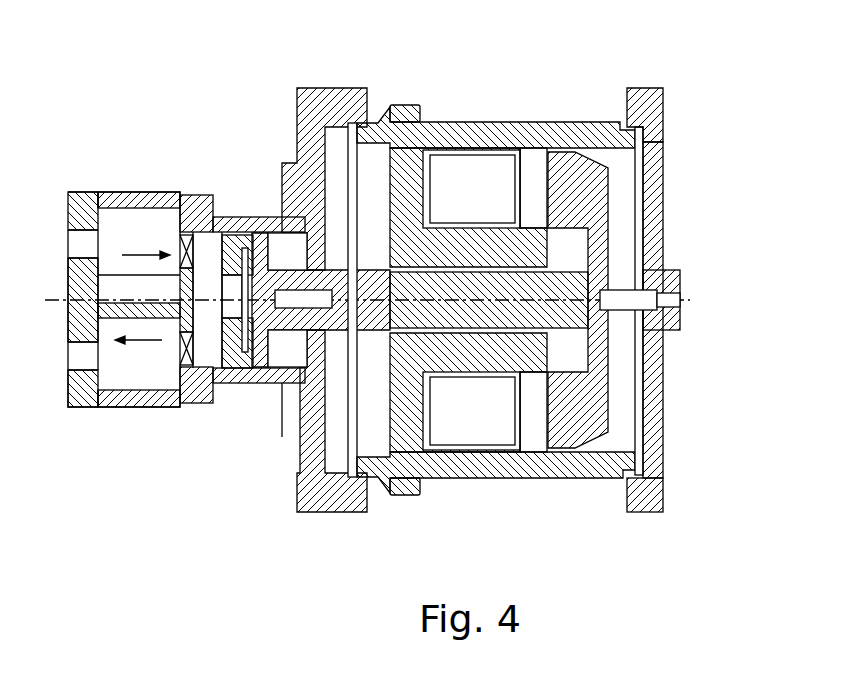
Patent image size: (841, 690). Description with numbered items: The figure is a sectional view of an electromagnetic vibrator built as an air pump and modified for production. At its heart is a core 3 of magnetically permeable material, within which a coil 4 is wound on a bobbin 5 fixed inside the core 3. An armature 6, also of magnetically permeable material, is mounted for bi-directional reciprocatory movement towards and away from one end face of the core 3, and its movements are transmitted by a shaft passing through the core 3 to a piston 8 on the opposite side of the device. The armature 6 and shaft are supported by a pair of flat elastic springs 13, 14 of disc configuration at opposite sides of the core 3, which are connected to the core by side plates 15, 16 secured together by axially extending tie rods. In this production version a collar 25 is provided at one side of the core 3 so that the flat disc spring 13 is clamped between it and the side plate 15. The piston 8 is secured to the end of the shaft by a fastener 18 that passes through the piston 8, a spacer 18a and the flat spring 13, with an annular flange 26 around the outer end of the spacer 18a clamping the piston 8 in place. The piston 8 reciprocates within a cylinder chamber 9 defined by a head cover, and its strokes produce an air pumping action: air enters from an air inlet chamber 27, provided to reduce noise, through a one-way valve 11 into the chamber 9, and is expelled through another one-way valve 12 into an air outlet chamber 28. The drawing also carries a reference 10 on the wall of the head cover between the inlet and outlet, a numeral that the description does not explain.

The core 3 is at (475, 112).
The coil 4 is at (462, 201).
The bobbin 5 is at (520, 187).
The armature 6 is at (573, 150).
The piston 8 is at (230, 357).
The cylinder chamber 9 is at (203, 283).
The pump housing wall with ports 10 is at (78, 290).
The one-way valve 11 is at (178, 242).
The one-way valve 12 is at (193, 400).
The flat elastic spring 13 is at (348, 165).
The flat elastic spring 14 is at (642, 165).
The side plate 15 is at (313, 502).
The side plate 16 is at (647, 505).
The fastener 18 is at (236, 297).
The spacer 18a is at (287, 385).
The collar 25 is at (403, 105).
The annular flange 26 is at (270, 362).
The air inlet chamber 27 is at (117, 223).
The air outlet chamber 28 is at (117, 373).